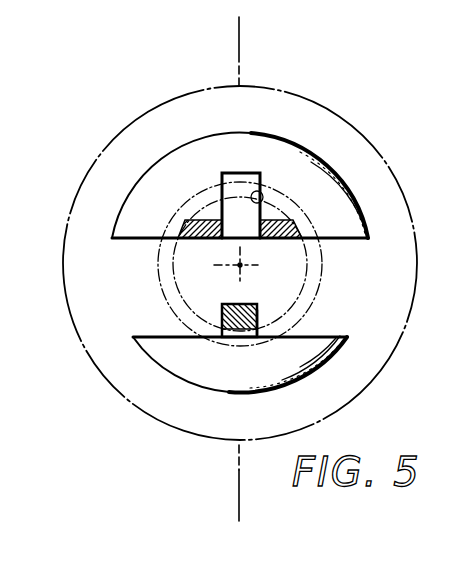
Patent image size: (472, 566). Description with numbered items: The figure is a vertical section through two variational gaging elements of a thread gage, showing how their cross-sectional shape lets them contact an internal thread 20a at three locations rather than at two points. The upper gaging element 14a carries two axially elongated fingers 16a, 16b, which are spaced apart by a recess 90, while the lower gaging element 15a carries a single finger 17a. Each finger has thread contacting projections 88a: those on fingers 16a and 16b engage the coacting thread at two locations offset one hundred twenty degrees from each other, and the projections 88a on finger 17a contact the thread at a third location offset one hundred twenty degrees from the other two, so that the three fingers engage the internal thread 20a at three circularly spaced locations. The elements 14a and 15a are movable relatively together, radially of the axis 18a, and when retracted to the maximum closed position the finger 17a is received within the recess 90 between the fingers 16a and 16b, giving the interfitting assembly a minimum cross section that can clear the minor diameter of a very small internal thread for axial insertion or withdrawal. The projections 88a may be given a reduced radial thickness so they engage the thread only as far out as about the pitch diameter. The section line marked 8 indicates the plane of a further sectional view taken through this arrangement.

The section line 8- 8 is at (228, 17).
The upper gaging element 14a is at (145, 193).
The lower gaging element 15a is at (184, 352).
The finger 16a is at (212, 240).
The finger 16b is at (283, 241).
The finger 17a is at (260, 315).
The axis 18a is at (237, 268).
The internal thread 20a is at (300, 291).
The thread contacting projections 88a is at (180, 218).
The recess 90 is at (270, 191).